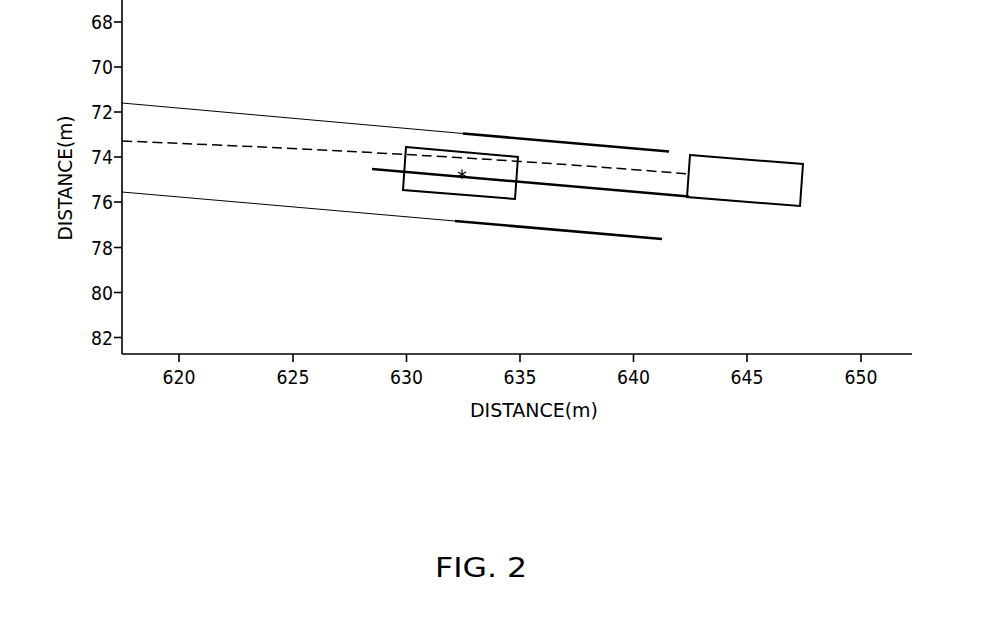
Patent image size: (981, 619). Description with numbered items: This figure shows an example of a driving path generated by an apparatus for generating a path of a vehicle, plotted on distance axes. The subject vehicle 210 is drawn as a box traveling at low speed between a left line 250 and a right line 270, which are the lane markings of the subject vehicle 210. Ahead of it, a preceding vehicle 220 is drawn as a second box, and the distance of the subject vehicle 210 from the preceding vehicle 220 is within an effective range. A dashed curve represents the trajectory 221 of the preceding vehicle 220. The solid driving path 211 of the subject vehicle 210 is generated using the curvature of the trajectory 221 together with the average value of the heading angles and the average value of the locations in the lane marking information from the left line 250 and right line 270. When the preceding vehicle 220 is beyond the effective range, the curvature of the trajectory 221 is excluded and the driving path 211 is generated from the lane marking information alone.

The subject vehicle 210 is at (498, 202).
The driving path 211 is at (593, 190).
The preceding vehicle 220 is at (783, 207).
The trajectory of the preceding vehicle 221 is at (250, 145).
The left line 250 is at (370, 125).
The right line 270 is at (388, 216).